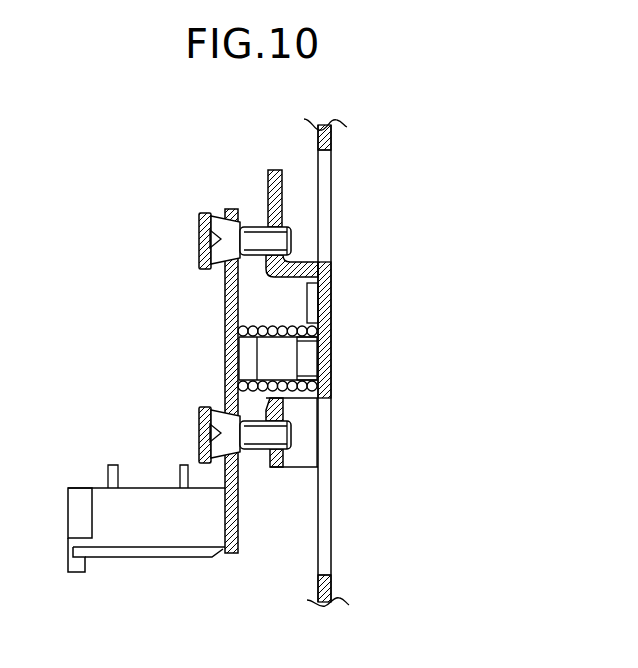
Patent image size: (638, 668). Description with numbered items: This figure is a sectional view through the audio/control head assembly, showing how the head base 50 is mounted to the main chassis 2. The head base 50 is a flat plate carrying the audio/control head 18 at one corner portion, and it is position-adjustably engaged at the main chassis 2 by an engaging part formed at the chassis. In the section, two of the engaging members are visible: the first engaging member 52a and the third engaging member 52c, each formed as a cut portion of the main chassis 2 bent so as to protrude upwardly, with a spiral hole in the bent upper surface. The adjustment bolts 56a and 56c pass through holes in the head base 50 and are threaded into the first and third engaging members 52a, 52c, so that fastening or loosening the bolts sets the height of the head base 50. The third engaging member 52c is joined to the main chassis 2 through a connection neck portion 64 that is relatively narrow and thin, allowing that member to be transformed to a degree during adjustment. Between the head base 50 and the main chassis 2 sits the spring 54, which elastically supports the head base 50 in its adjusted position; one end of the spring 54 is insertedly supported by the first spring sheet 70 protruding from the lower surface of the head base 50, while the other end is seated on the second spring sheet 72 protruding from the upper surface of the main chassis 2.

The main chassis 2 is at (328, 590).
The audio/control head 18 is at (108, 502).
The head base 50 is at (236, 553).
The first engaging member 52a is at (273, 467).
The third engaging member 52c is at (268, 171).
The spring 54 is at (262, 327).
The adjustment bolt 56a is at (199, 409).
The adjustment bolt 56c is at (199, 216).
The connection neck portion 64 is at (296, 284).
The first spring sheet 70 is at (247, 353).
The second spring sheet 72 is at (305, 357).